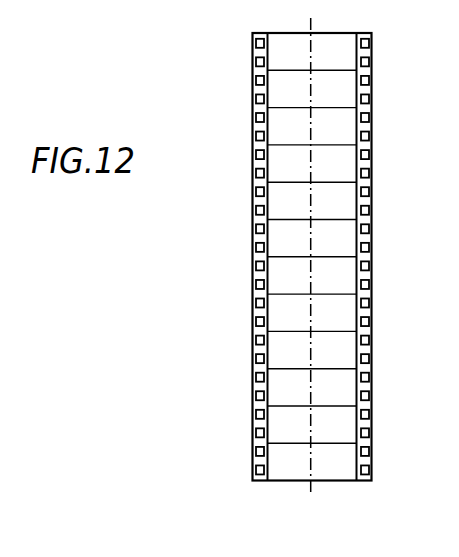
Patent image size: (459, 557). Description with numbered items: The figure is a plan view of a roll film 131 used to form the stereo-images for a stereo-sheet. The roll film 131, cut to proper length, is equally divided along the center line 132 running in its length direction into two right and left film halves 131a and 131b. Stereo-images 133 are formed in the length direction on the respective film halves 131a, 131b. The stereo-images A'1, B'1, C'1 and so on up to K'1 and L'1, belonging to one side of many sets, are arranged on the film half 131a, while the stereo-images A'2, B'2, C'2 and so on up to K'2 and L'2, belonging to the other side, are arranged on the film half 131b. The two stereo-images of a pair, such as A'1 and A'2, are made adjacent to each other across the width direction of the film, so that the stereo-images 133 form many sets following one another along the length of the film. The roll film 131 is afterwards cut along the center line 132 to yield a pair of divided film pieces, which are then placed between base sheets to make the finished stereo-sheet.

The roll film 131 is at (252, 475).
The film half 131a is at (372, 313).
The film half 131b is at (252, 313).
The center line 132 is at (313, 475).
The stereo-images 133 is at (276, 277).
The stereo-image L'1 is at (381, 44).
The stereo-image L'2 is at (231, 50).
The stereo-image K'1 is at (384, 86).
The stereo-image K'2 is at (232, 91).
The stereo-image C'1 is at (392, 383).
The stereo-image C'2 is at (233, 387).
The stereo-image B'1 is at (391, 424).
The stereo-image B'2 is at (233, 434).
The stereo-image A'1 is at (387, 468).
The stereo-image A'2 is at (231, 472).